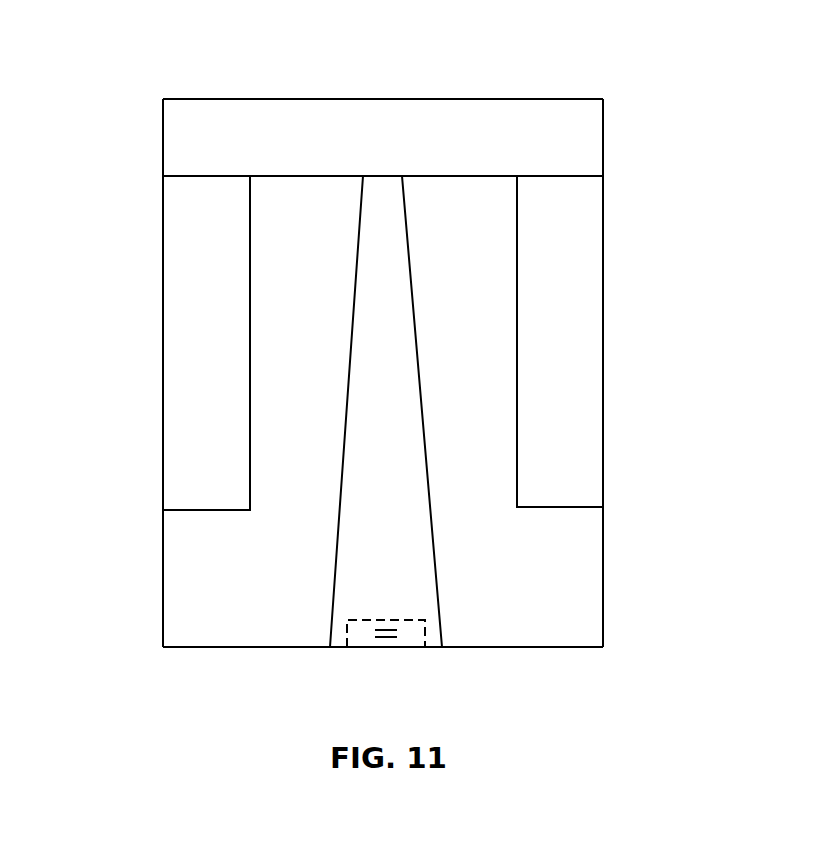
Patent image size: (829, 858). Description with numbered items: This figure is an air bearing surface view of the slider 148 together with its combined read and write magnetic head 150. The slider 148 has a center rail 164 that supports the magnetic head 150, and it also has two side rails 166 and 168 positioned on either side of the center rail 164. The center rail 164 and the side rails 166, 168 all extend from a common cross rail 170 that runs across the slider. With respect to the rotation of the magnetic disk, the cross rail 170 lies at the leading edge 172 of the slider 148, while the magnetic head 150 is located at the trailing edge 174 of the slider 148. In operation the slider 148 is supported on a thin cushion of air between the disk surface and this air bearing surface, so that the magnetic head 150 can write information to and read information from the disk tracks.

The slider 148 is at (164, 599).
The magnetic head 150 is at (365, 648).
The center rail 164 is at (368, 286).
The side rail 166 is at (178, 255).
The side rail 168 is at (588, 253).
The cross rail 170 is at (303, 113).
The leading edge 172 is at (482, 98).
The trailing edge 174 is at (505, 648).